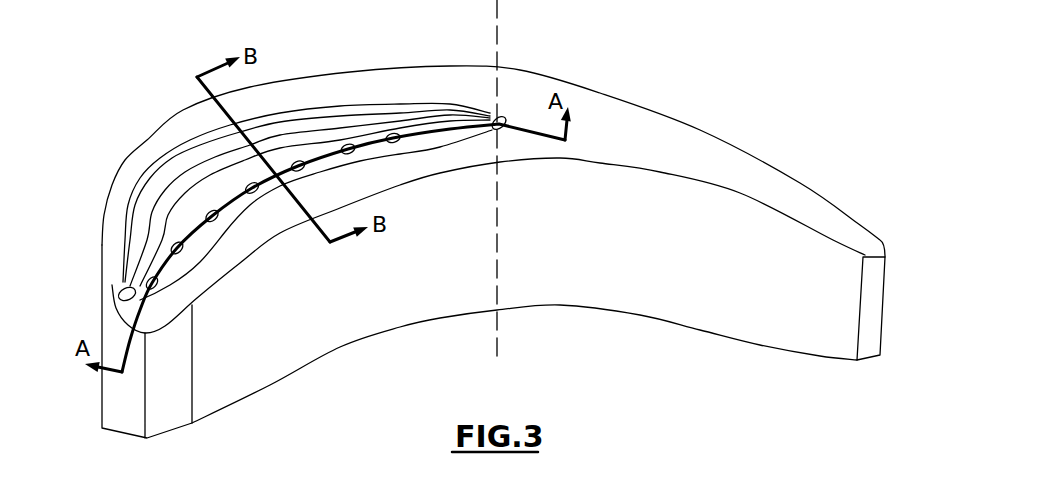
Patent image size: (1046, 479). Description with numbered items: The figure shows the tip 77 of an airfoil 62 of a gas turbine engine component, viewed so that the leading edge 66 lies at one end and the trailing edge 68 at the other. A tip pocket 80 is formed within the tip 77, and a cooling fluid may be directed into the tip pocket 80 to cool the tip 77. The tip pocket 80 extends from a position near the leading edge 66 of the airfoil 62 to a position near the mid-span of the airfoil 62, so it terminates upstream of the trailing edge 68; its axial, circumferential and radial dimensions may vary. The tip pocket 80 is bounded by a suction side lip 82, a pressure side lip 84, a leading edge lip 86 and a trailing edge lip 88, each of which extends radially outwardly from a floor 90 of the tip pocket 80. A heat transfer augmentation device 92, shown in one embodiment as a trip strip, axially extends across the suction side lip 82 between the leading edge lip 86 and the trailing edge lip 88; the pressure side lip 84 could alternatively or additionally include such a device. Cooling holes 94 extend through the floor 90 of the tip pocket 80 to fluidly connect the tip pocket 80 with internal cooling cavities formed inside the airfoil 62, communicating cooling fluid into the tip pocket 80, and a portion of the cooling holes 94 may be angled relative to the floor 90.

The airfoil 62 is at (840, 317).
The leading edge 66 is at (127, 407).
The trailing edge 68 is at (878, 272).
The tip 77 is at (708, 125).
The tip pocket 80 is at (188, 195).
The suction side lip 82 is at (372, 120).
The pressure side lip 84 is at (412, 140).
The leading edge lip 86 is at (123, 287).
The trailing edge lip 88 is at (499, 117).
The floor 90 is at (320, 147).
The heat transfer augmentation device 92 is at (220, 158).
The cooling holes 94 is at (212, 220).